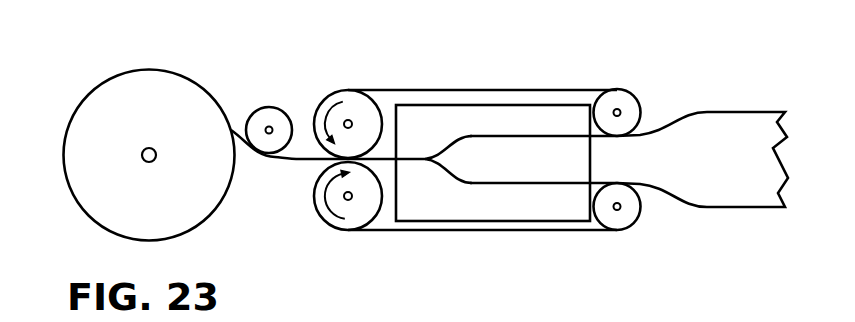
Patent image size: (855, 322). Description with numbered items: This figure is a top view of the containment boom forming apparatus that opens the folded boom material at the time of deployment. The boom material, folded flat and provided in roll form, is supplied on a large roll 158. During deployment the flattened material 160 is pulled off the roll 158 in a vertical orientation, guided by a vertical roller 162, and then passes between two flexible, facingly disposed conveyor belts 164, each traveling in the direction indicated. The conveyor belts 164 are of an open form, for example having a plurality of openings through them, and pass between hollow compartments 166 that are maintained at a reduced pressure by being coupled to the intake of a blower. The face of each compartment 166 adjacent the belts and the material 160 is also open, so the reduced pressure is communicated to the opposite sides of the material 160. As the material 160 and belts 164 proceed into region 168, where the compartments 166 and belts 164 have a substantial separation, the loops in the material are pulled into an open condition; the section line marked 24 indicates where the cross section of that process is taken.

The large roll 158 is at (102, 88).
The flattened material 160 is at (293, 162).
The vertical roller 162 is at (250, 108).
The conveyor belts 164 is at (560, 88).
The hollow compartments 166 is at (467, 120).
The region 168 is at (510, 158).
The section line 24- 24 is at (465, 86).